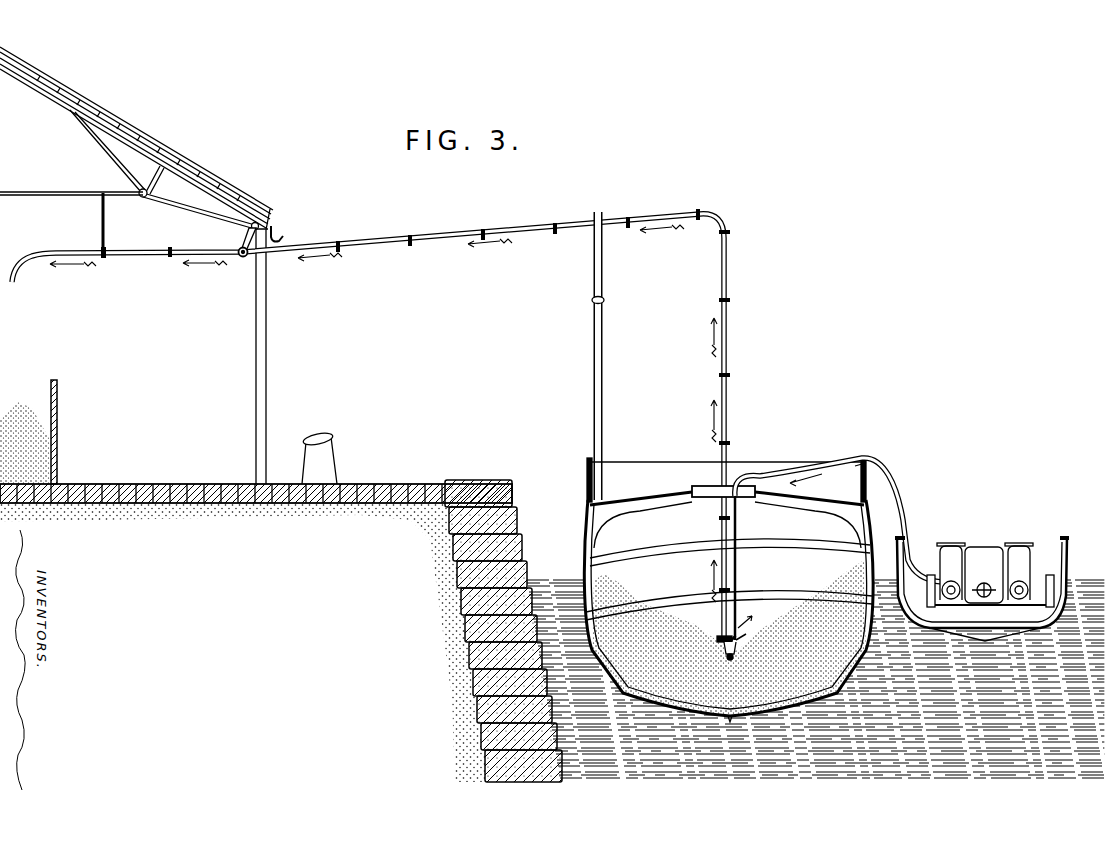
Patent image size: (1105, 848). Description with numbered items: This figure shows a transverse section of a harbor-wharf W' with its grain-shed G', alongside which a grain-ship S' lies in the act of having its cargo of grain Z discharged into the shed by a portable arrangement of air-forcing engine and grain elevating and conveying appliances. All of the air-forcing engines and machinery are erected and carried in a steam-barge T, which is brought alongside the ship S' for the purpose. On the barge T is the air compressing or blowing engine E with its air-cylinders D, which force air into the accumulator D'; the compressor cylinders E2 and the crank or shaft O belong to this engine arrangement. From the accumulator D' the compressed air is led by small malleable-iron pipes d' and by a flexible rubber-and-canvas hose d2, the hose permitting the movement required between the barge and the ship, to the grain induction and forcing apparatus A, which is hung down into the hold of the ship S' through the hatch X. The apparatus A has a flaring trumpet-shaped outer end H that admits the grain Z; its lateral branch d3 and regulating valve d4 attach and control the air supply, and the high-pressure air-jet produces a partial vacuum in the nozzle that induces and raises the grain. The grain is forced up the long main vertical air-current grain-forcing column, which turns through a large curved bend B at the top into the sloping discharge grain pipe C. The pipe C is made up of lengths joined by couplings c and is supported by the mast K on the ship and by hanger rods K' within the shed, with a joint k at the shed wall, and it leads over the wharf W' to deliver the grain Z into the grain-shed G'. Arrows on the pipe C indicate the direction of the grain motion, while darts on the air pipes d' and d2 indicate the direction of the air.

The grain-shed G' is at (134, 326).
The hanger rods K' is at (179, 225).
The grain-conveying conduit C is at (378, 425).
The pipe couplings c is at (413, 400).
The swivel joint k is at (242, 262).
The curved bend B is at (706, 222).
The mast / support K is at (604, 356).
The grain-ship S' is at (728, 590).
The hatch X is at (723, 492).
The hose d2 is at (898, 509).
The air-forcing pipe d' is at (828, 569).
The grain induction and forcing apparatus A is at (720, 640).
The outer end of the nozzle H is at (733, 655).
The lateral branch d3 is at (746, 642).
The controlling valve d4 is at (750, 620).
The grain Z is at (433, 559).
The harbor-wharf W' is at (281, 581).
The steam-barge T is at (982, 589).
The air compressor cylinders E2 is at (985, 571).
The accumulator D' is at (984, 575).
The air-cylinder D is at (943, 585).
The crank shaft O is at (984, 586).
The air compressing engine E is at (1000, 597).